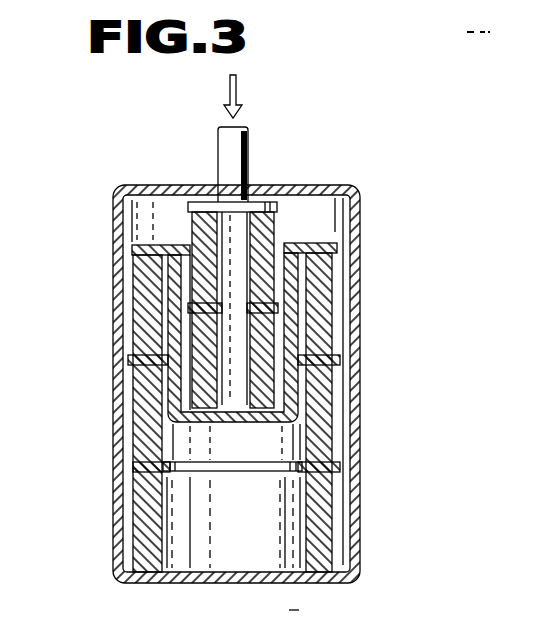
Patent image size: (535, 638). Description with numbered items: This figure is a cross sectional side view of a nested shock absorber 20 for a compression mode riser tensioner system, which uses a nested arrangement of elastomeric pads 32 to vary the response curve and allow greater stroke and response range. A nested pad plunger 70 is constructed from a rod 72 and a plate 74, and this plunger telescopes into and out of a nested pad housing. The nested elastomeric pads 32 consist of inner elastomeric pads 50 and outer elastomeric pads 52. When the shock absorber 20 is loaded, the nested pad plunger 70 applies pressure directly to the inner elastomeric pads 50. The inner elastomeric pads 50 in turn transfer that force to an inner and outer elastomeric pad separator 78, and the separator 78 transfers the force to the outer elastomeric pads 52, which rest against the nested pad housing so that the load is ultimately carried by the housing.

The shock absorber 20 is at (235, 329).
The nested elastomeric pads 32 is at (374, 303).
The inner elastomeric pads 50 is at (275, 226).
The outer elastomeric pads 52 is at (135, 335).
The nested pad plunger 70 is at (263, 131).
The rod 72 is at (218, 150).
The plate 74 is at (188, 212).
The inner and outer elastomeric pad separator 78 is at (332, 243).